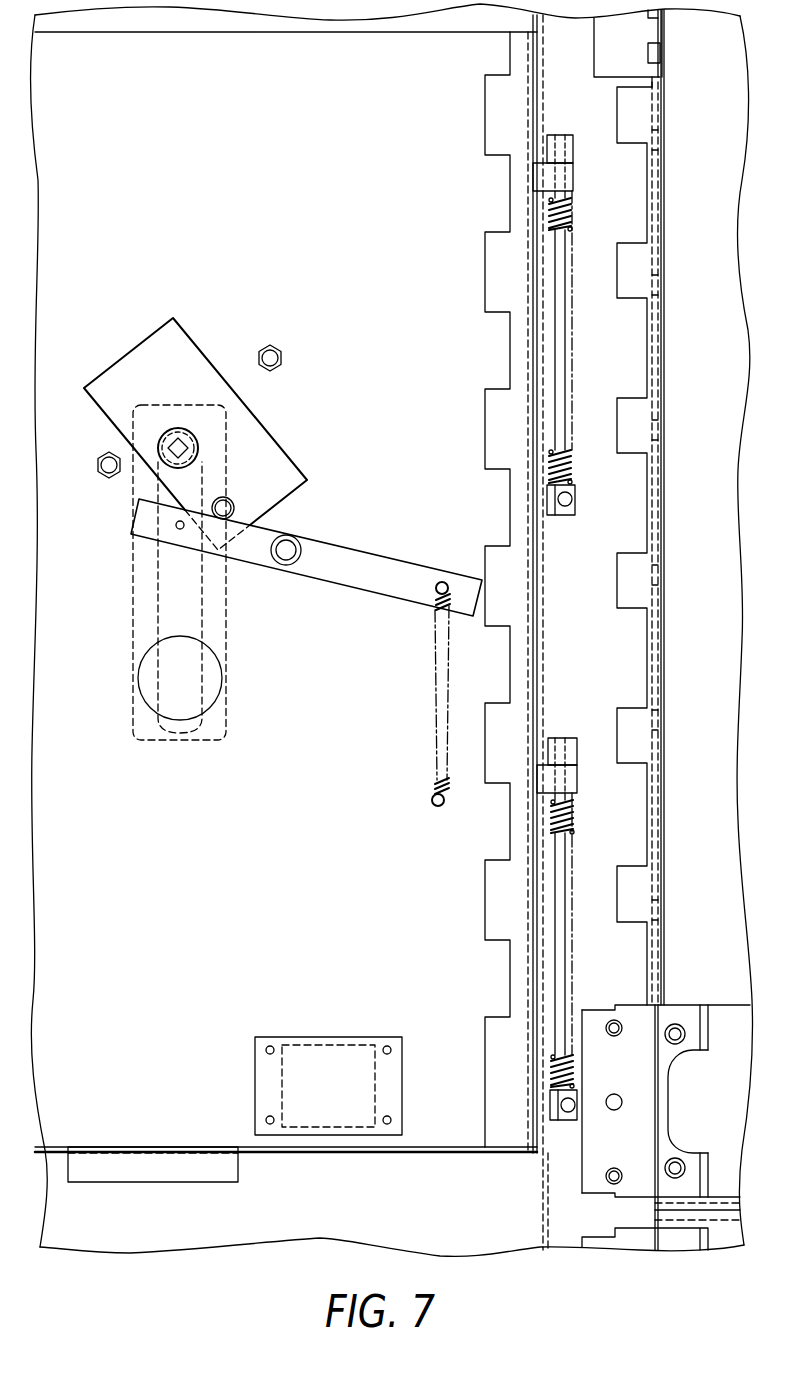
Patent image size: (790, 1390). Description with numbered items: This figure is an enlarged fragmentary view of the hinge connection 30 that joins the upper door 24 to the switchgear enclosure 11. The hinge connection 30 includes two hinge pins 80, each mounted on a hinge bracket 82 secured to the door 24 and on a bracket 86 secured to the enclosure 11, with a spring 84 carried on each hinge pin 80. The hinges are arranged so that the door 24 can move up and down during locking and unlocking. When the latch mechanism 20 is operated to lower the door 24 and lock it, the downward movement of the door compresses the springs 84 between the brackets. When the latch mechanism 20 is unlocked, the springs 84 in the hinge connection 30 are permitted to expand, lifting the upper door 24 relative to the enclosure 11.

The enclosure 11 is at (664, 350).
The upper door 24 is at (285, 128).
The latch mechanism 20 is at (302, 444).
The hinge connection 30 is at (619, 597).
The hinge pin 80 is at (577, 135).
The hinge bracket 82 is at (573, 178).
The spring 84 is at (577, 224).
The bracket 86 is at (573, 155).